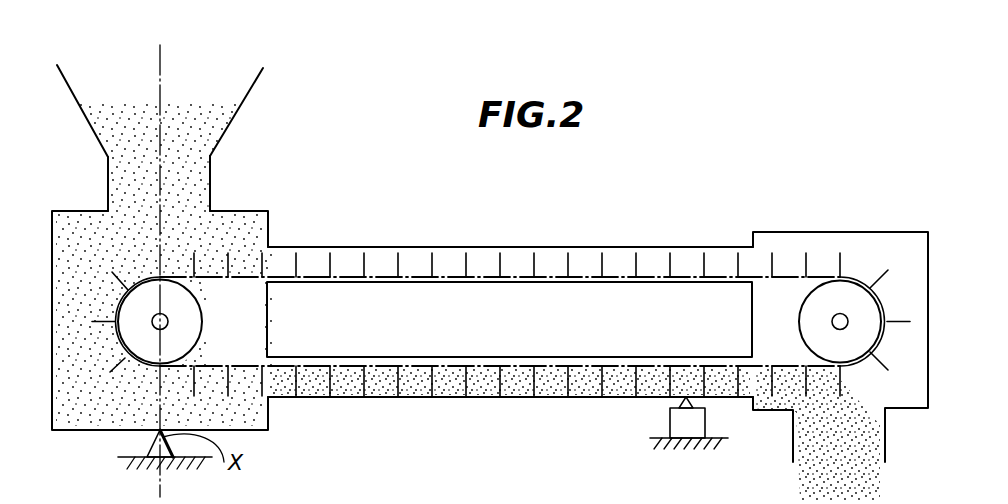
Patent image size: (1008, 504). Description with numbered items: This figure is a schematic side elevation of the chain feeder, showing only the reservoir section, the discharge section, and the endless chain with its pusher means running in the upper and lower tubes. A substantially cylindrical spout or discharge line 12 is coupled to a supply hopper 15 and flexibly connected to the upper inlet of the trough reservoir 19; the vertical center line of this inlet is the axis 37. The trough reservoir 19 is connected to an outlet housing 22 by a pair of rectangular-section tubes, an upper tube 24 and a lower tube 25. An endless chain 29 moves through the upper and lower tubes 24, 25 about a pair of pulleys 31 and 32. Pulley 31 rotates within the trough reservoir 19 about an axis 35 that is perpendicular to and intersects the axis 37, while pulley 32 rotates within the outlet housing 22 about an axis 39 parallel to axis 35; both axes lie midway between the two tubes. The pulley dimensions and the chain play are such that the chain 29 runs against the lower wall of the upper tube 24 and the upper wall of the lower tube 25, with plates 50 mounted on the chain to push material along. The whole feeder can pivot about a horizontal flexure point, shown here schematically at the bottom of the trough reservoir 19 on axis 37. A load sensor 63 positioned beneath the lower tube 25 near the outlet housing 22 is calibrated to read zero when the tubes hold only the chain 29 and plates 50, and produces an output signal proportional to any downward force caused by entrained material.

The discharge line 12 is at (212, 173).
The supply hopper 15 is at (255, 87).
The trough reservoir 19 is at (52, 413).
The outlet housing 22 is at (893, 232).
The upper tube 24 is at (465, 247).
The lower tube 25 is at (375, 357).
The endless chain 29 is at (521, 280).
The pulley 31 is at (181, 302).
The pulley 32 is at (865, 300).
The axis 35 is at (164, 325).
The axis 37 is at (162, 62).
The axis 39 is at (835, 327).
The plates 50 is at (460, 270).
The load sensor 63 is at (678, 422).